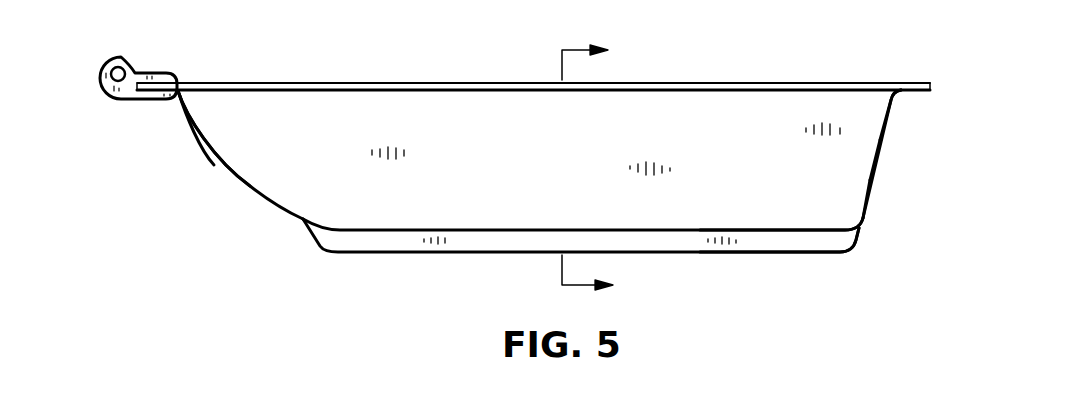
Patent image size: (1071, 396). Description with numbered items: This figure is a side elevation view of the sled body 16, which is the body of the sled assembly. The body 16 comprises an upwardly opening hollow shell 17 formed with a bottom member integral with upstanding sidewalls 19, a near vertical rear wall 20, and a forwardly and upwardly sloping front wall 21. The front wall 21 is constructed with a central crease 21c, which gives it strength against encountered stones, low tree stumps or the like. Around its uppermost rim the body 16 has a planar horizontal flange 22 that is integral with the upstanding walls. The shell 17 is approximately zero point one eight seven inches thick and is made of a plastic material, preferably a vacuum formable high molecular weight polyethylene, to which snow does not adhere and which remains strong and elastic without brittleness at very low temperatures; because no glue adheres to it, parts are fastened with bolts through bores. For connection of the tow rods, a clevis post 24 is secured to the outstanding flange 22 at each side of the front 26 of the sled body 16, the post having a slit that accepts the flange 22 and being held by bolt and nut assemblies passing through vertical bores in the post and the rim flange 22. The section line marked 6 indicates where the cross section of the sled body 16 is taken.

The clevis post 24 is at (138, 62).
The planar horizontal flange 22 is at (762, 83).
The front 26 is at (203, 127).
The central crease 21c is at (252, 185).
The front wall 21 is at (293, 190).
The hollow shell 17 is at (862, 152).
The rear wall 20 is at (873, 177).
The body 16 is at (853, 190).
The sidewalls 19 is at (783, 188).
The section line 6- 6 is at (587, 169).